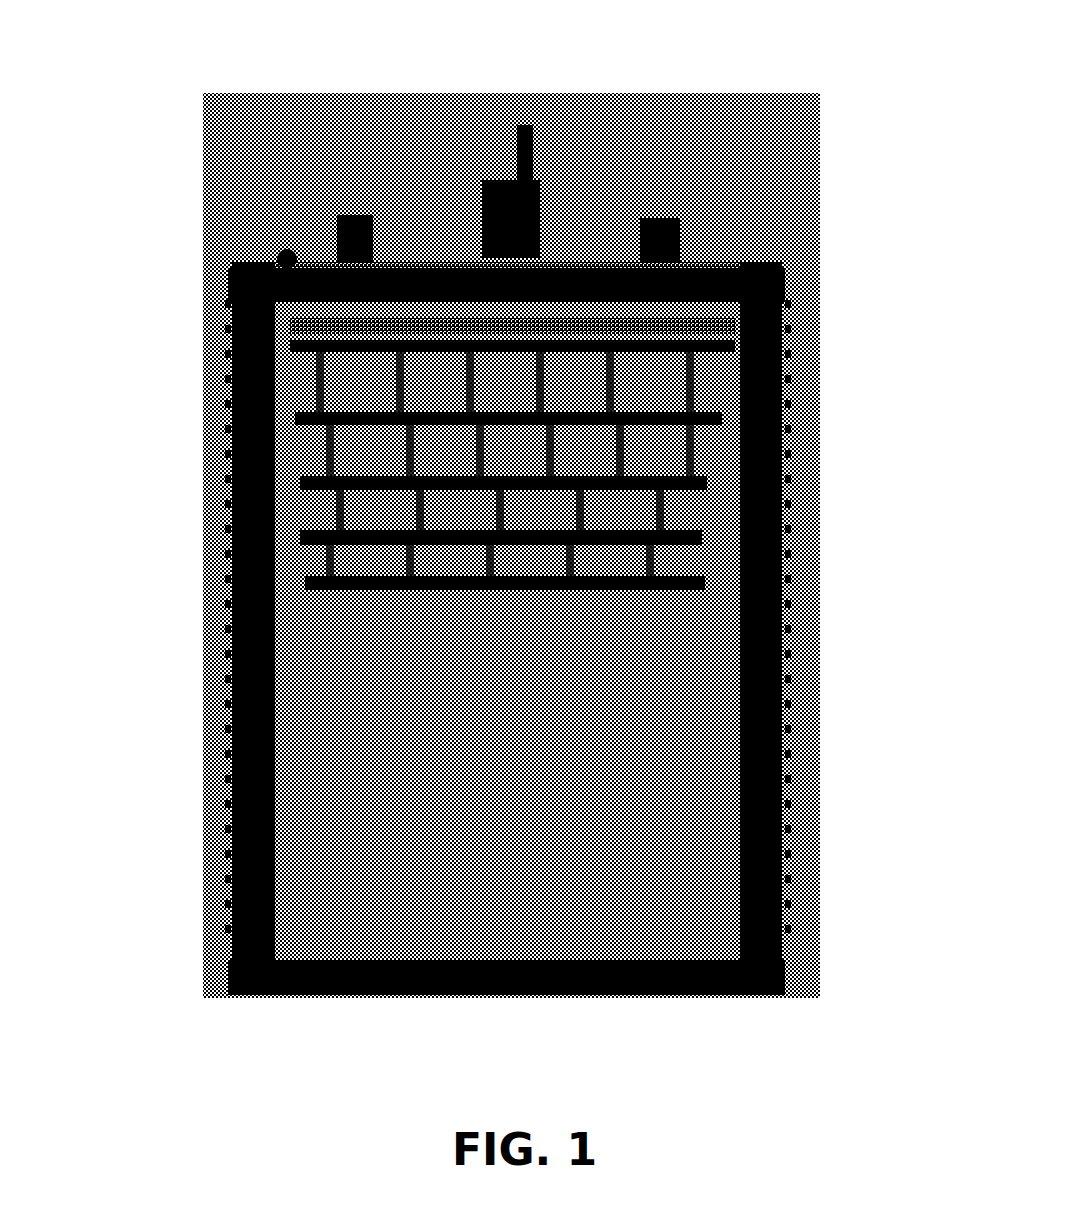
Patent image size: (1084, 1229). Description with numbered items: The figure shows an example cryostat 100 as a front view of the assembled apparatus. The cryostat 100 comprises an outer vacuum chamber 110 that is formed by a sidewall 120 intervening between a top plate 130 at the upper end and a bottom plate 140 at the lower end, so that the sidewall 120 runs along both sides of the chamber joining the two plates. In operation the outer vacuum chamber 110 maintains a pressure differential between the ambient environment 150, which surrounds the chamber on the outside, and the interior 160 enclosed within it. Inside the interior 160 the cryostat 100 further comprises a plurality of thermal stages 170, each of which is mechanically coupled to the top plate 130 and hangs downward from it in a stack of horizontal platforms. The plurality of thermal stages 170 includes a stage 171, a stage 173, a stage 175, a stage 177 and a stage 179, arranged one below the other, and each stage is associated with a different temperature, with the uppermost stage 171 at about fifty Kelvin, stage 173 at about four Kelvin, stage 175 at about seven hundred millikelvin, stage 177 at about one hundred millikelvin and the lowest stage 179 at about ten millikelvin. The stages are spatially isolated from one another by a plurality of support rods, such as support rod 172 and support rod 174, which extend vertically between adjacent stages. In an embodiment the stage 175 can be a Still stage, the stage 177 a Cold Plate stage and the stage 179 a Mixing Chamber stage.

The cryostat 100 is at (786, 58).
The outer vacuum chamber 110 is at (720, 222).
The sidewall 120 is at (278, 645).
The top plate 130 is at (250, 282).
The bottom plate 140 is at (410, 998).
The ambient environment 150 is at (536, 723).
The interior 160 is at (507, 775).
The plurality of thermal stages 170 is at (498, 510).
The stage 171 is at (292, 347).
The support rod 172 is at (698, 382).
The stage 173 is at (300, 418).
The support rod 174 is at (702, 445).
The stage 175 is at (302, 482).
The stage 177 is at (302, 537).
The stage 179 is at (362, 583).